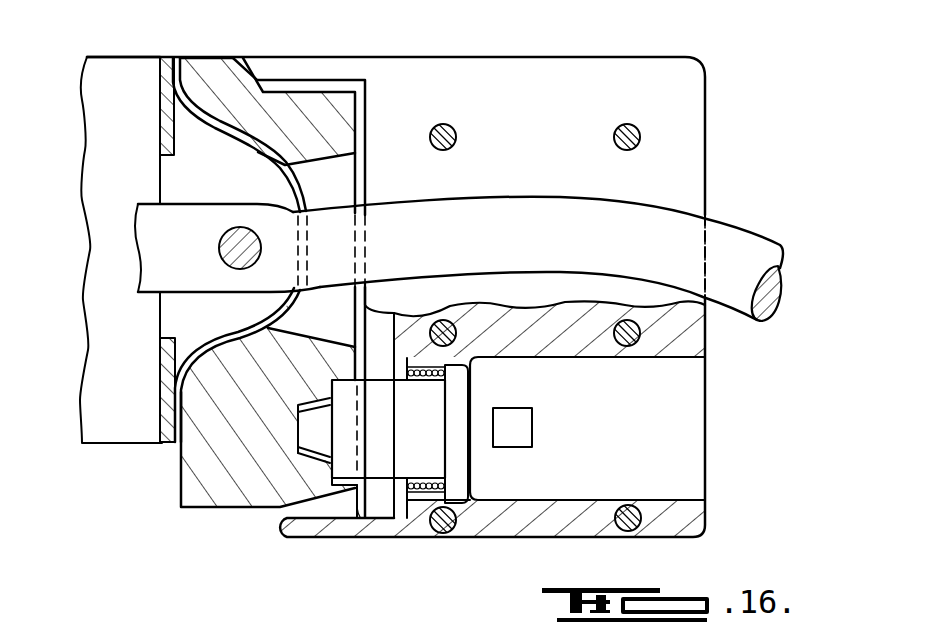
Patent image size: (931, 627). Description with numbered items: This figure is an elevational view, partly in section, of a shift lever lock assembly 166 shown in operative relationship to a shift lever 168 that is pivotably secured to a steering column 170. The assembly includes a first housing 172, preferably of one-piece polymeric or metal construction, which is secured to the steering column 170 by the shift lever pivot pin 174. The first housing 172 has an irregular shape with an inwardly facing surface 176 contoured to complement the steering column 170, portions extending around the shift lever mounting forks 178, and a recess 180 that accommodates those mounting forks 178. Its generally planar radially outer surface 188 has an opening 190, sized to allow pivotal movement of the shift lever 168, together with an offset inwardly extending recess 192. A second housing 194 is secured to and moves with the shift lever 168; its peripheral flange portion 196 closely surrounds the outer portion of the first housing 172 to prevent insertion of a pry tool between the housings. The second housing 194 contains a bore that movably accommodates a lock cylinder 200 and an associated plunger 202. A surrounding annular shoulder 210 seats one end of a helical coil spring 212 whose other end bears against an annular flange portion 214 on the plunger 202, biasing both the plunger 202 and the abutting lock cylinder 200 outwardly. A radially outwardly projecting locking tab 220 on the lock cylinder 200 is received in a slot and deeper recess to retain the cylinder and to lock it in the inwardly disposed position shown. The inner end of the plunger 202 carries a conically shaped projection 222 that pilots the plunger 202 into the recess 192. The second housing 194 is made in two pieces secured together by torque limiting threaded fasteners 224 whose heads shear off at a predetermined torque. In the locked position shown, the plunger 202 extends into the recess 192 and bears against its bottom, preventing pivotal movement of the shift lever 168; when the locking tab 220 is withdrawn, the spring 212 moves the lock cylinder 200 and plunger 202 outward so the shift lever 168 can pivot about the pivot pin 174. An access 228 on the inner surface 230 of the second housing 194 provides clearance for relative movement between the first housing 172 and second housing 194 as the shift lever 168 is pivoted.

The shift lever lock assembly 166 is at (753, 115).
The shift lever 168 is at (750, 241).
The steering column 170 is at (96, 428).
The first housing 172 is at (188, 478).
The shift lever pivot pin 174 is at (220, 249).
The inwardly facing surface 176 is at (168, 362).
The shift lever mounting forks 178 is at (222, 165).
The recess 180 is at (252, 150).
The radially outer surface 188 is at (358, 110).
The opening 190 is at (340, 180).
The inwardly extending recess 192 is at (298, 441).
The second housing 194 is at (709, 186).
The peripheral flange portion 196 is at (282, 65).
The lock cylinder 200 is at (648, 450).
The plunger 202 is at (377, 488).
The annular shoulder 210 is at (440, 493).
The helical coil spring 212 is at (418, 372).
The annular flange portion 214 is at (462, 467).
The locking tab 220 is at (525, 424).
The conically shaped projection 222 is at (323, 443).
The torque limiting threaded fasteners 224 is at (613, 137).
The access 228 is at (388, 508).
The inner surface 230 is at (362, 117).